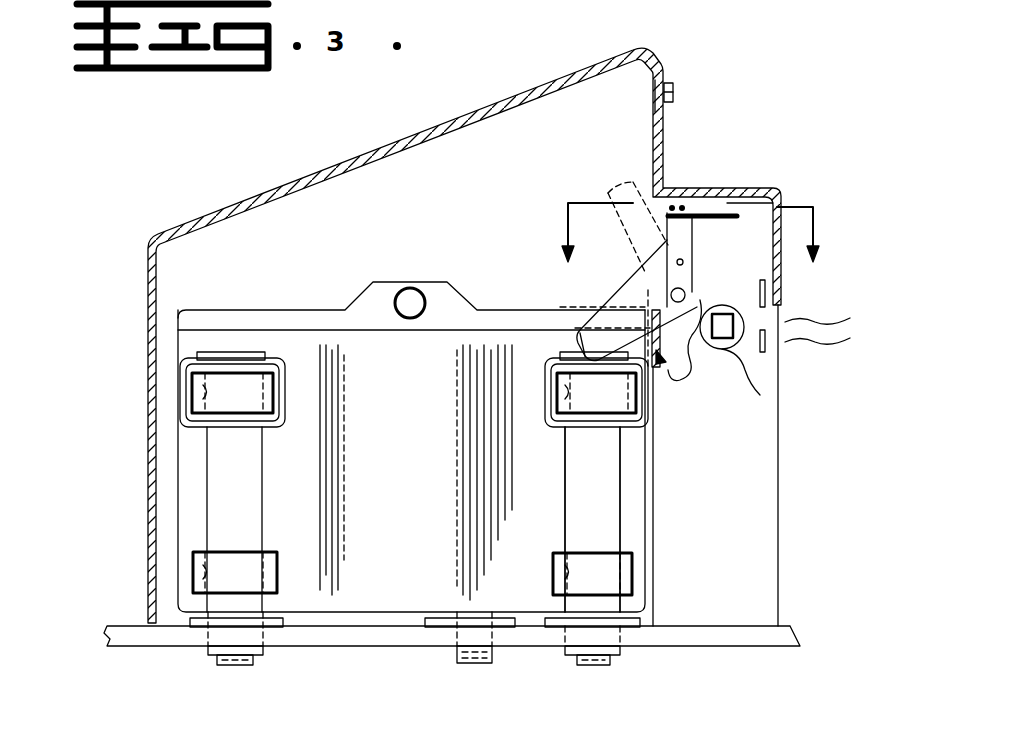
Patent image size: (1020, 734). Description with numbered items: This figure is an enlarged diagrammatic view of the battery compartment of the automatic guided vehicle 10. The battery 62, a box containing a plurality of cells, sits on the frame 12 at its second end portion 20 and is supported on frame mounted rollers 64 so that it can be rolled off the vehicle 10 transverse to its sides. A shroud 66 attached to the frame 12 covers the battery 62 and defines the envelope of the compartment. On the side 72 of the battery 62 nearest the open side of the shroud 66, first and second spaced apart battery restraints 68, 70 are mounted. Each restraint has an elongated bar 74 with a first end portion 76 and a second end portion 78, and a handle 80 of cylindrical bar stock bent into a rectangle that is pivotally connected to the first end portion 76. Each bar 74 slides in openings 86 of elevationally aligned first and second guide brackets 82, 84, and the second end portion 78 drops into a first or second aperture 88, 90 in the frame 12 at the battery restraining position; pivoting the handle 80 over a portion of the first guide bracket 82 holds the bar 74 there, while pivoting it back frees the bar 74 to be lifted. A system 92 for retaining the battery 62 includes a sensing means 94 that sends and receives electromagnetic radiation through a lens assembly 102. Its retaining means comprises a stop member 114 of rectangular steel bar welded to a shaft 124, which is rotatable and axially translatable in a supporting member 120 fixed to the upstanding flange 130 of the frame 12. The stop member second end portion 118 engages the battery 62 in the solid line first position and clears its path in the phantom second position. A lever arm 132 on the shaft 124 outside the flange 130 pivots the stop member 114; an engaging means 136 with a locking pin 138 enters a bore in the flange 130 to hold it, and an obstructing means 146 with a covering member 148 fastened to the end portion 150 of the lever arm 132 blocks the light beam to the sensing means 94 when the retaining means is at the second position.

The vehicle 10 is at (150, 162).
The frame 12 is at (797, 640).
The second end portion 20 is at (775, 590).
The battery 62 is at (422, 483).
The rollers 64 is at (451, 661).
The shroud 66 is at (148, 270).
The first battery restraint 68 is at (398, 519).
The second battery restraint 70 is at (642, 459).
The side of the battery 72 is at (312, 340).
The elongated bar 74 is at (207, 478).
The first end portion of the bar 76 is at (262, 352).
The second end portion of the bar 78 is at (217, 603).
The handle 80 is at (180, 378).
The first guide bracket 82 is at (280, 395).
The second guide bracket 84 is at (277, 578).
The openings 86 is at (193, 400).
The first aperture 88 is at (262, 652).
The second aperture 90 is at (620, 651).
The system 92 is at (711, 177).
The sensing means 94 is at (702, 302).
The lens assembly 102 is at (745, 340).
The stop member 114 is at (612, 300).
The stop member second end portion 118 is at (590, 356).
The supporting member 120 is at (690, 278).
The shaft 124 is at (744, 318).
The upstanding flange 130 is at (672, 375).
The lever arm 132 is at (640, 262).
The engaging means 136 is at (745, 258).
The locking pin 138 is at (699, 258).
The obstructing means 146 is at (697, 162).
The covering member 148 is at (718, 212).
The end portion of the lever arm 150 is at (648, 250).